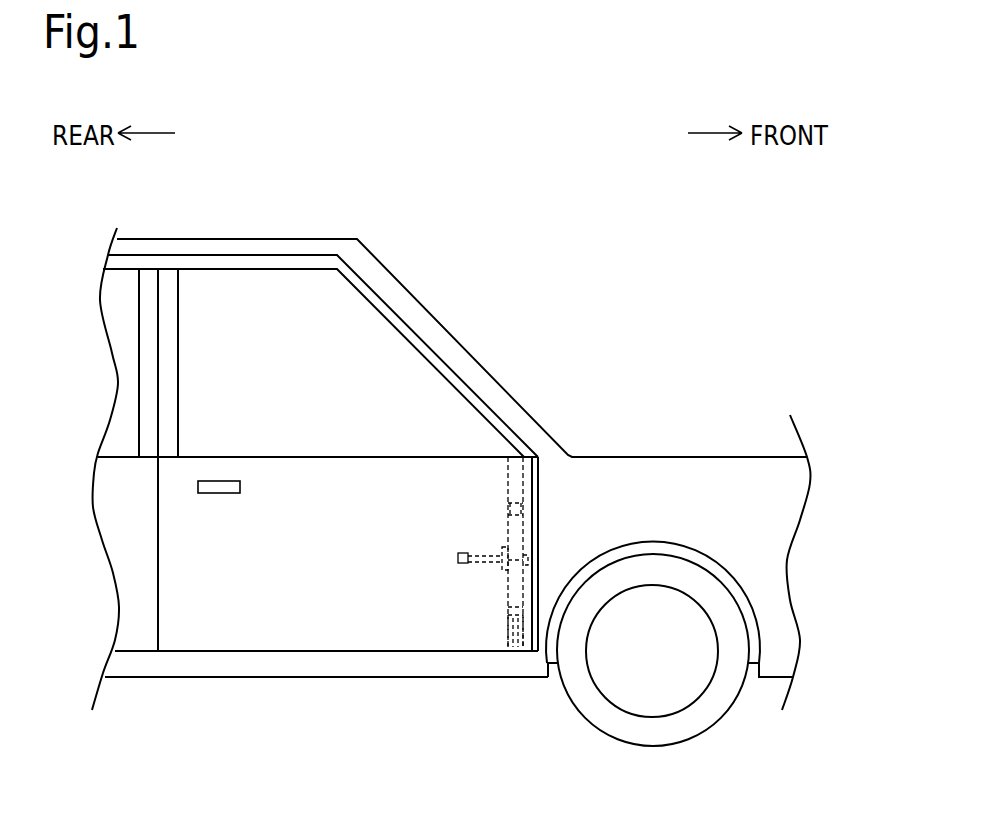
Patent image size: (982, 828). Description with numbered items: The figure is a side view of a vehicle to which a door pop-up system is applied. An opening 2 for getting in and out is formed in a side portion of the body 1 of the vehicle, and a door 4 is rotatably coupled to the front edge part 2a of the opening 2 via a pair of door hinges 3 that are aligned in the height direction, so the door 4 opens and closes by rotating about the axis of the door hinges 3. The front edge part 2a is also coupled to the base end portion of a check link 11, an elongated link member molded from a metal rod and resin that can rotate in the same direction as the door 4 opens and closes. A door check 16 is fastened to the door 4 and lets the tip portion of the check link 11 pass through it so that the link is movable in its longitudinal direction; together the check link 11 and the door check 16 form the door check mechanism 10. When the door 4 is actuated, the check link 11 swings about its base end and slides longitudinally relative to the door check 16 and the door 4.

The body 1 is at (202, 690).
The opening 2 is at (259, 651).
The front edge part 2a is at (507, 633).
The door hinges 3 is at (543, 470).
The door 4 is at (344, 664).
The door check mechanism 10 is at (382, 477).
The check link 11 is at (470, 556).
The door check 16 is at (507, 538).